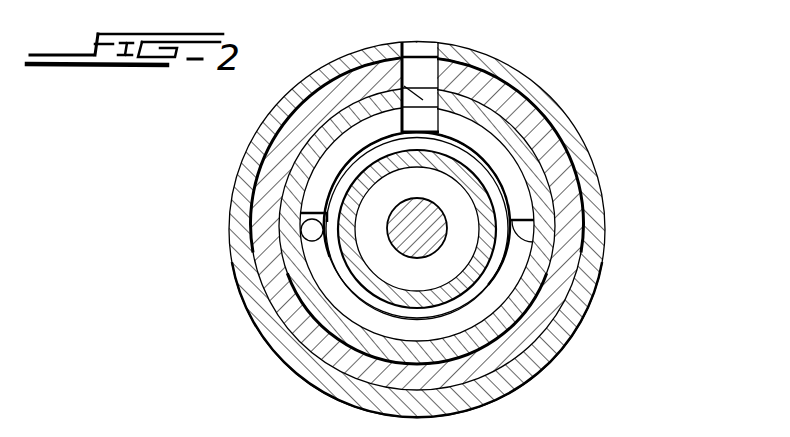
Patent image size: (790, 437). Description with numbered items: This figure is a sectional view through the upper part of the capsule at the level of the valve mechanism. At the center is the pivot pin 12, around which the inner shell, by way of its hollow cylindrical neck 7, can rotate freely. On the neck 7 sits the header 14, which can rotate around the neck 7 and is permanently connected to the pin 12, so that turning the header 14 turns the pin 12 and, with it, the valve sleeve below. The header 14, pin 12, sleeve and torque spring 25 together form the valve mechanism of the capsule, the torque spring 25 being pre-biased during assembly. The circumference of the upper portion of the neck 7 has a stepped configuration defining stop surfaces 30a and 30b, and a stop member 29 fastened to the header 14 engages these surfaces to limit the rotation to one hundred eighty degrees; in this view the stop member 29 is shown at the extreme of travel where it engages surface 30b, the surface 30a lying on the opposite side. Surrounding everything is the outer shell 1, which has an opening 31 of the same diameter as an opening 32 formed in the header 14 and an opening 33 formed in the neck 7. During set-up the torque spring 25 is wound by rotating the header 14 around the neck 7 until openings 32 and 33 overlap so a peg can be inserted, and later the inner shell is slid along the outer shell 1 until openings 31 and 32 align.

The outer shell 1 is at (263, 172).
The neck 7 is at (507, 287).
The pivot pin 12 is at (424, 207).
The header 14 is at (302, 229).
The torque spring 25 is at (510, 130).
The stop member 29 is at (302, 212).
The stop surface 30a is at (533, 242).
The stop surface 30b is at (298, 258).
The opening 31 is at (412, 45).
The opening 32 is at (401, 55).
The opening 33 is at (404, 86).